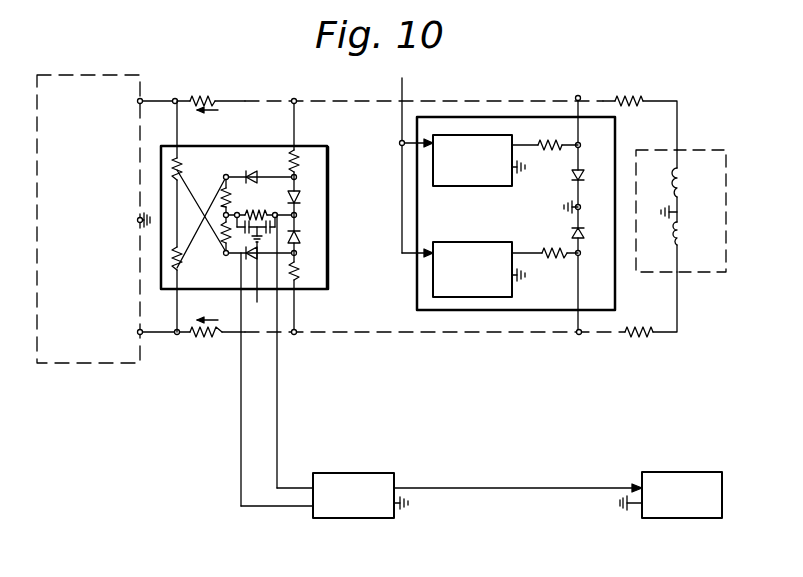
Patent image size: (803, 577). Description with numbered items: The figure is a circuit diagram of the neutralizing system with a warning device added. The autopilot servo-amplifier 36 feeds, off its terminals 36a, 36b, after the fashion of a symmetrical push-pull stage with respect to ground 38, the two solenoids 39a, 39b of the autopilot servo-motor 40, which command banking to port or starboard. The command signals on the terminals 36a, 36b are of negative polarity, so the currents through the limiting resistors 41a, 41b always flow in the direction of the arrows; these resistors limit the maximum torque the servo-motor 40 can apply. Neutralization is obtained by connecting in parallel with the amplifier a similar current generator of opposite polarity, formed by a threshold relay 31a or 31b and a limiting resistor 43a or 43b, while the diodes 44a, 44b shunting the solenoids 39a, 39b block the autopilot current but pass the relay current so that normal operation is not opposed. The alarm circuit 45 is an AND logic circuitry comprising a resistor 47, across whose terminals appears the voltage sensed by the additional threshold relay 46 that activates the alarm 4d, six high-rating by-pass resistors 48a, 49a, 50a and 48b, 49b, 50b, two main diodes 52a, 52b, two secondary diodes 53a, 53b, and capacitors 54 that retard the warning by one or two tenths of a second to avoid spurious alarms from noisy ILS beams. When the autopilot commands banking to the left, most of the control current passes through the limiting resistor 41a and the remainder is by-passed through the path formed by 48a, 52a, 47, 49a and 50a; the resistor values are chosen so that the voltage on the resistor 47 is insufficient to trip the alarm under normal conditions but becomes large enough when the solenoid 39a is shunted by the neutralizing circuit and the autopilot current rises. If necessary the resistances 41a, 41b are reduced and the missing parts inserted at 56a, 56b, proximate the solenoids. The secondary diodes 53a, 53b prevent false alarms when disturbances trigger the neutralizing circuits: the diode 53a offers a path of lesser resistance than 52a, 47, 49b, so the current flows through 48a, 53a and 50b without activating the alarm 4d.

The autopilot servo-amplifier 36 is at (82, 80).
The terminal 36a is at (138, 102).
The terminal 36b is at (138, 332).
The ground 38 is at (138, 221).
The limiting resistor 41a is at (198, 97).
The limiting resistor 41b is at (210, 336).
The by-pass resistor 50a is at (175, 172).
The by-pass resistor 50b is at (175, 256).
The by-pass resistor 49a is at (224, 236).
The by-pass resistor 49b is at (224, 196).
The resistor 47 is at (256, 215).
The secondary diode 53a is at (256, 130).
The secondary diode 53b is at (264, 286).
The capacitor 54 is at (235, 253).
The by-pass resistor 48a is at (296, 148).
The by-pass resistor 48b is at (300, 272).
The main diode 52a is at (300, 194).
The main diode 52b is at (300, 236).
The alarm circuit 45 is at (329, 153).
The threshold relay 31a is at (433, 157).
The threshold relay 31b is at (433, 278).
The limiting resistor 43a is at (545, 143).
The limiting resistor 43b is at (556, 260).
The diode 44a is at (576, 178).
The diode 44b is at (575, 237).
The resistor 56a is at (630, 97).
The resistor 56b is at (640, 334).
The autopilot servo-motor 40 is at (693, 150).
The solenoid 39a is at (681, 190).
The solenoid 39b is at (681, 232).
The threshold relay 46 is at (353, 473).
The alarm 4d is at (685, 518).